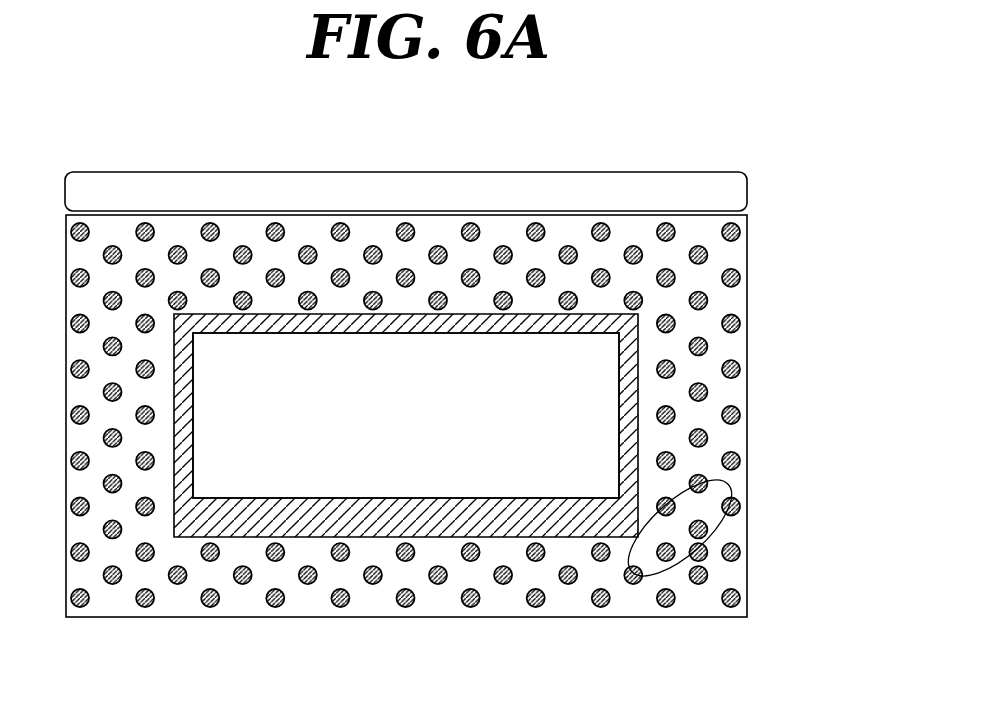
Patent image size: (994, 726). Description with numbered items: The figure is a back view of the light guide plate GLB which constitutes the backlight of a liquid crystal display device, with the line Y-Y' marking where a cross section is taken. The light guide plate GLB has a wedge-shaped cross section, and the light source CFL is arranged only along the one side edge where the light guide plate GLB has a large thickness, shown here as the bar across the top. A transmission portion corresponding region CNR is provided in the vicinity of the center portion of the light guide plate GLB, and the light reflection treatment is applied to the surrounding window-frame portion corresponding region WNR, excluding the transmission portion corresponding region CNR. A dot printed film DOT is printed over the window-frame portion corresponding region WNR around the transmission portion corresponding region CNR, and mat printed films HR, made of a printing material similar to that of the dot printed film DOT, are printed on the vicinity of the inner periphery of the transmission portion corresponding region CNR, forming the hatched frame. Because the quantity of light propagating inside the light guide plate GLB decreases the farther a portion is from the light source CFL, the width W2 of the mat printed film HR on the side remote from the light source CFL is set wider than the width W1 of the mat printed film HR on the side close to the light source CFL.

The light source CFL is at (733, 188).
The light guide plate GLB is at (728, 397).
The dot printed film DOT is at (707, 556).
The window-frame portion corresponding region WNR is at (724, 486).
The mat printed film HR is at (637, 347).
The transmission portion corresponding region CNR is at (406, 415).
The width of the mat printed film on the side close to the light source W1 is at (292, 348).
The width of the mat printed film on the side remote from the light source W2 is at (294, 457).
The line Y-Y' Y is at (569, 652).